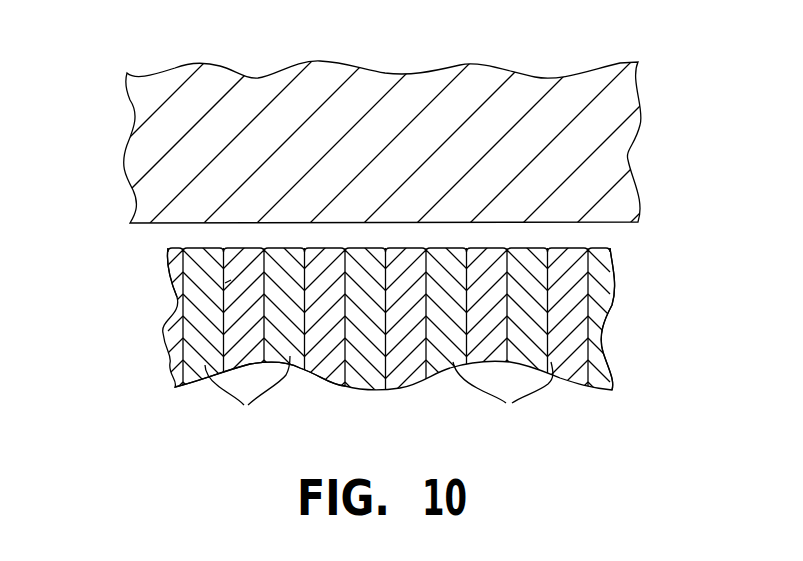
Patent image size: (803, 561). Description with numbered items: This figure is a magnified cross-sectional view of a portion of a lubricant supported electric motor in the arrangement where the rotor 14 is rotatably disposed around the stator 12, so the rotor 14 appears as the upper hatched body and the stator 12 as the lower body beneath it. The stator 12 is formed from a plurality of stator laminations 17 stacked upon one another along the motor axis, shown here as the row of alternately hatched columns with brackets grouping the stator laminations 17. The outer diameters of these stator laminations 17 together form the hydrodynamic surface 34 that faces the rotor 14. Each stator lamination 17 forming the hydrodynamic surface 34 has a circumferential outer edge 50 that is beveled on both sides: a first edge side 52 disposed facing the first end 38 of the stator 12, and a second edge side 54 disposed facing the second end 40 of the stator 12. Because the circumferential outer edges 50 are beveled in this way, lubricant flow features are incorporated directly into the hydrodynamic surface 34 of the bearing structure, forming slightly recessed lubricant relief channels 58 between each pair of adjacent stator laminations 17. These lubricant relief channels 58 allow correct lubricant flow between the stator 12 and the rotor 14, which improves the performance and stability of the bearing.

The rotor 14 is at (130, 150).
The stator 12 is at (167, 297).
The circumferential outer edge 50 is at (372, 248).
The lubricant relief channels 58 is at (431, 248).
The hydrodynamic surface 34 is at (483, 248).
The first end of the stator 38 is at (165, 256).
The second end of the stator 40 is at (615, 293).
The first edge side 52 is at (172, 363).
The stator laminations 17 is at (379, 397).
The second edge side 54 is at (225, 283).